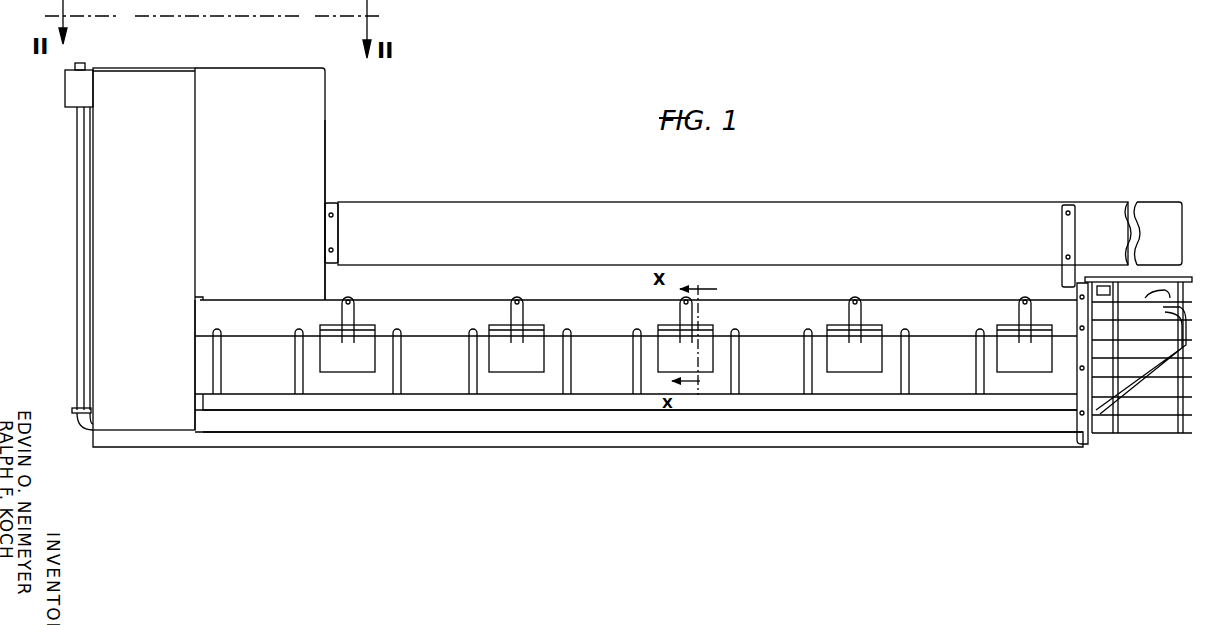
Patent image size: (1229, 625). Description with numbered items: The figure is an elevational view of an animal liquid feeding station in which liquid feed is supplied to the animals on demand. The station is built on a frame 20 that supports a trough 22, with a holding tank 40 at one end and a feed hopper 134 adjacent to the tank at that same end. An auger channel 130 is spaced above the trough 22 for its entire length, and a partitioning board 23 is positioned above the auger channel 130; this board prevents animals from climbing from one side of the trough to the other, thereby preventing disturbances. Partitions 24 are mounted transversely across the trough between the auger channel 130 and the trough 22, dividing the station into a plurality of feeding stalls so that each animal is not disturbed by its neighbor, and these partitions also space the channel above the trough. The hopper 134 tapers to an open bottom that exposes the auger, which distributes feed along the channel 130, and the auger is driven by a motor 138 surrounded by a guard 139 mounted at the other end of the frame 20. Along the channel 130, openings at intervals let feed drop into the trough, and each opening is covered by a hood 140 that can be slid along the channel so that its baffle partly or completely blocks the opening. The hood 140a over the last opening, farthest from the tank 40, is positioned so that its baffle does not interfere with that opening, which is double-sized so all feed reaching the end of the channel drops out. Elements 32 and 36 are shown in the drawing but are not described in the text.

The frame 20 is at (560, 447).
The trough 22 is at (448, 422).
The partitioning board 23 is at (537, 208).
The partitions 24 is at (803, 372).
The housing section 32 is at (160, 90).
The housing 36 is at (125, 68).
The holding tank 40 is at (92, 178).
The auger channel 130 is at (260, 317).
The feed hopper 134 is at (286, 182).
The motor 138 is at (1163, 307).
The guard 139 is at (1135, 437).
The hood 140 is at (352, 368).
The last hood 140a is at (1018, 364).